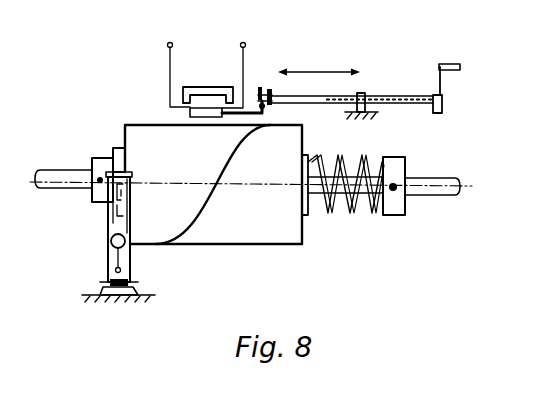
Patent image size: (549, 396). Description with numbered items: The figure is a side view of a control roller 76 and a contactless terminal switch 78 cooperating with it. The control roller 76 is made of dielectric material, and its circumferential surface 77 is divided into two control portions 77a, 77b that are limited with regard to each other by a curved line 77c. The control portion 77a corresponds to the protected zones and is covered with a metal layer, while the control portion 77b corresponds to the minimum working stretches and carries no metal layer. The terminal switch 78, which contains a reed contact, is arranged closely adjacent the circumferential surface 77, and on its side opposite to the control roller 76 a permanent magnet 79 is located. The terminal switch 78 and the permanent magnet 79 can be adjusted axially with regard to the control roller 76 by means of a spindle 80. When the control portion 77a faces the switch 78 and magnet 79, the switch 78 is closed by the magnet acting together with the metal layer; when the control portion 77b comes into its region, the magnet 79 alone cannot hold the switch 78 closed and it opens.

The control roller 76 is at (125, 130).
The circumferential surface 77 is at (278, 249).
The control portion 77a is at (150, 220).
The control portion 77b is at (235, 228).
The curved line 77c is at (212, 182).
The terminal switch 78 is at (190, 110).
The permanent magnet 79 is at (206, 91).
The spindle 80 is at (387, 96).